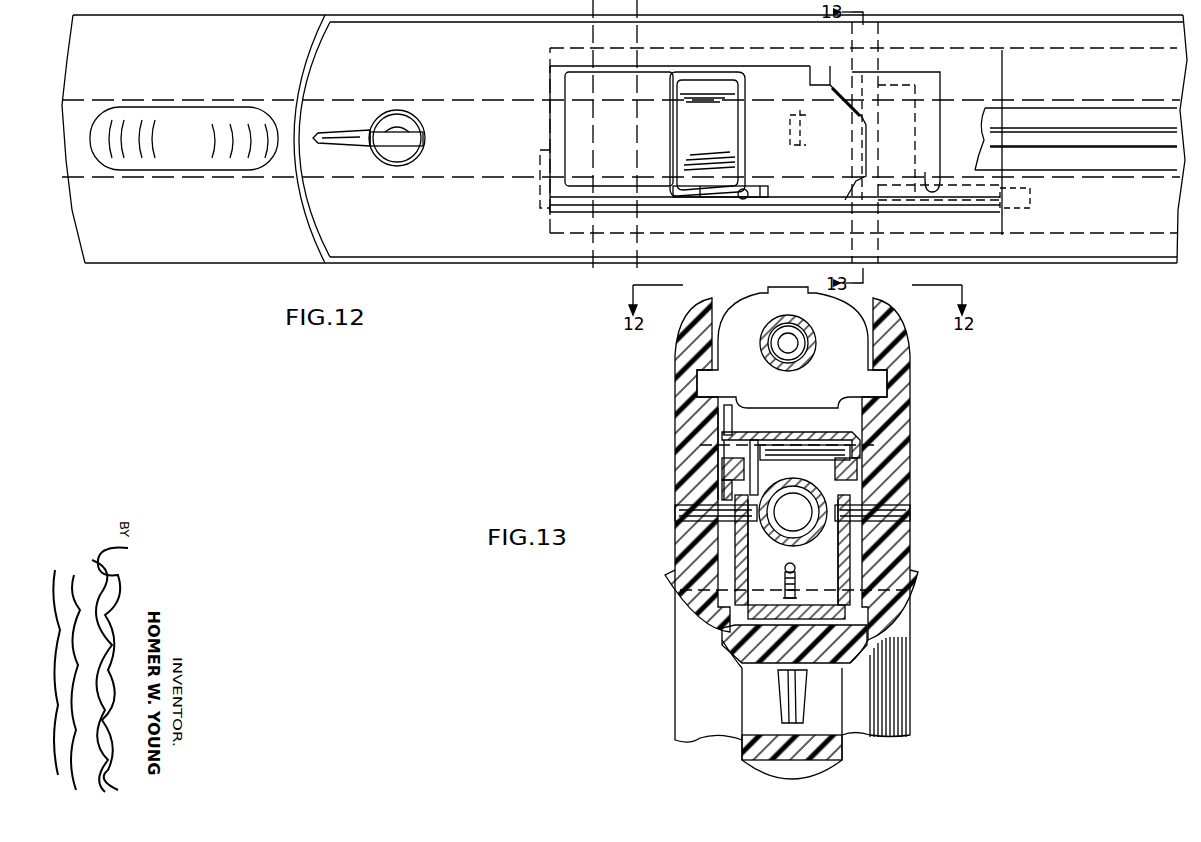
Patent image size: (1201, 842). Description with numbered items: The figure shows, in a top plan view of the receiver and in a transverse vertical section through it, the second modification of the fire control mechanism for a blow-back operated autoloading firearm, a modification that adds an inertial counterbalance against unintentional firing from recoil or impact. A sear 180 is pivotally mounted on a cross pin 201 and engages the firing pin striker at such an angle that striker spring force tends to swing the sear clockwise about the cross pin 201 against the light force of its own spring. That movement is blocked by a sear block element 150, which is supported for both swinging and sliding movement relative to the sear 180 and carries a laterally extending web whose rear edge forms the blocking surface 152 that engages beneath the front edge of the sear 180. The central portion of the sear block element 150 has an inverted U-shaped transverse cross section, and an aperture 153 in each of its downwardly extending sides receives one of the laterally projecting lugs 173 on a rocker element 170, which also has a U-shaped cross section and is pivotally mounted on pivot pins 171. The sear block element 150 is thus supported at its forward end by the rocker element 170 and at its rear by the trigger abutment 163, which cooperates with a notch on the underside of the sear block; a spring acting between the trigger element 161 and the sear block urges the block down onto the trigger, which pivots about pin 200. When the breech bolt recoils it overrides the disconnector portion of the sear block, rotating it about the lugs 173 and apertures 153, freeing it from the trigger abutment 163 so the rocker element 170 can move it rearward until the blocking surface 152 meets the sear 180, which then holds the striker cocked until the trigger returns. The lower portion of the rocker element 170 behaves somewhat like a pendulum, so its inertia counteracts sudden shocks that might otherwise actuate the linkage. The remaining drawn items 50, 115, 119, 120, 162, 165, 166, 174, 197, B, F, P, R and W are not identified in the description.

In FIG. 12, the carriage bracket 50 is at (936, 93).
In FIG. 13, the bore 115 is at (786, 352).
In FIG. 13, the bushing 119 is at (770, 341).
In FIG. 12, the slide block 120 is at (708, 95).
In FIG. 13, the slide block 120 is at (850, 575).
In FIG. 13, the sear block element 150 is at (722, 441).
In FIG. 12, the blocking surface 152 is at (866, 137).
In FIG. 13, the aperture 153 is at (738, 453).
In FIG. 12, the trigger element 161 is at (768, 197).
In FIG. 13, the trigger element 161 is at (790, 690).
In FIG. 13, the washer 162 is at (712, 490).
In FIG. 12, the trigger abutment 163 is at (717, 196).
In FIG. 13, the trigger abutment 163 is at (720, 427).
In FIG. 13, the plug 165 is at (748, 745).
In FIG. 13, the screw 166 is at (760, 580).
In FIG. 12, the rocker element 170 is at (918, 146).
In FIG. 13, the rocker element 170 is at (897, 548).
In FIG. 12, the pivot pins 171 is at (880, 45).
In FIG. 13, the pivot pins 171 is at (690, 519).
In FIG. 13, the laterally projecting lugs 173 is at (724, 468).
In FIG. 13, the bottom plate 174 is at (775, 597).
In FIG. 12, the sear 180 is at (650, 80).
In FIG. 13, the sear 180 is at (842, 424).
In FIG. 13, the section plane 197 is at (905, 600).
In FIG. 13, the pin 200 is at (905, 620).
In FIG. 12, the cross pin 201 is at (592, 29).
In FIG. 13, the cross pin 201 is at (897, 444).
In FIG. 12, the body B is at (1143, 203).
In FIG. 13, the body B is at (727, 322).
In FIG. 12, the flange F is at (1105, 143).
In FIG. 12, the pad P is at (188, 123).
In FIG. 12, the rail R is at (729, 38).
In FIG. 13, the rail R is at (897, 433).
In FIG. 12, the wall W is at (703, 48).
In FIG. 13, the wall W is at (675, 382).